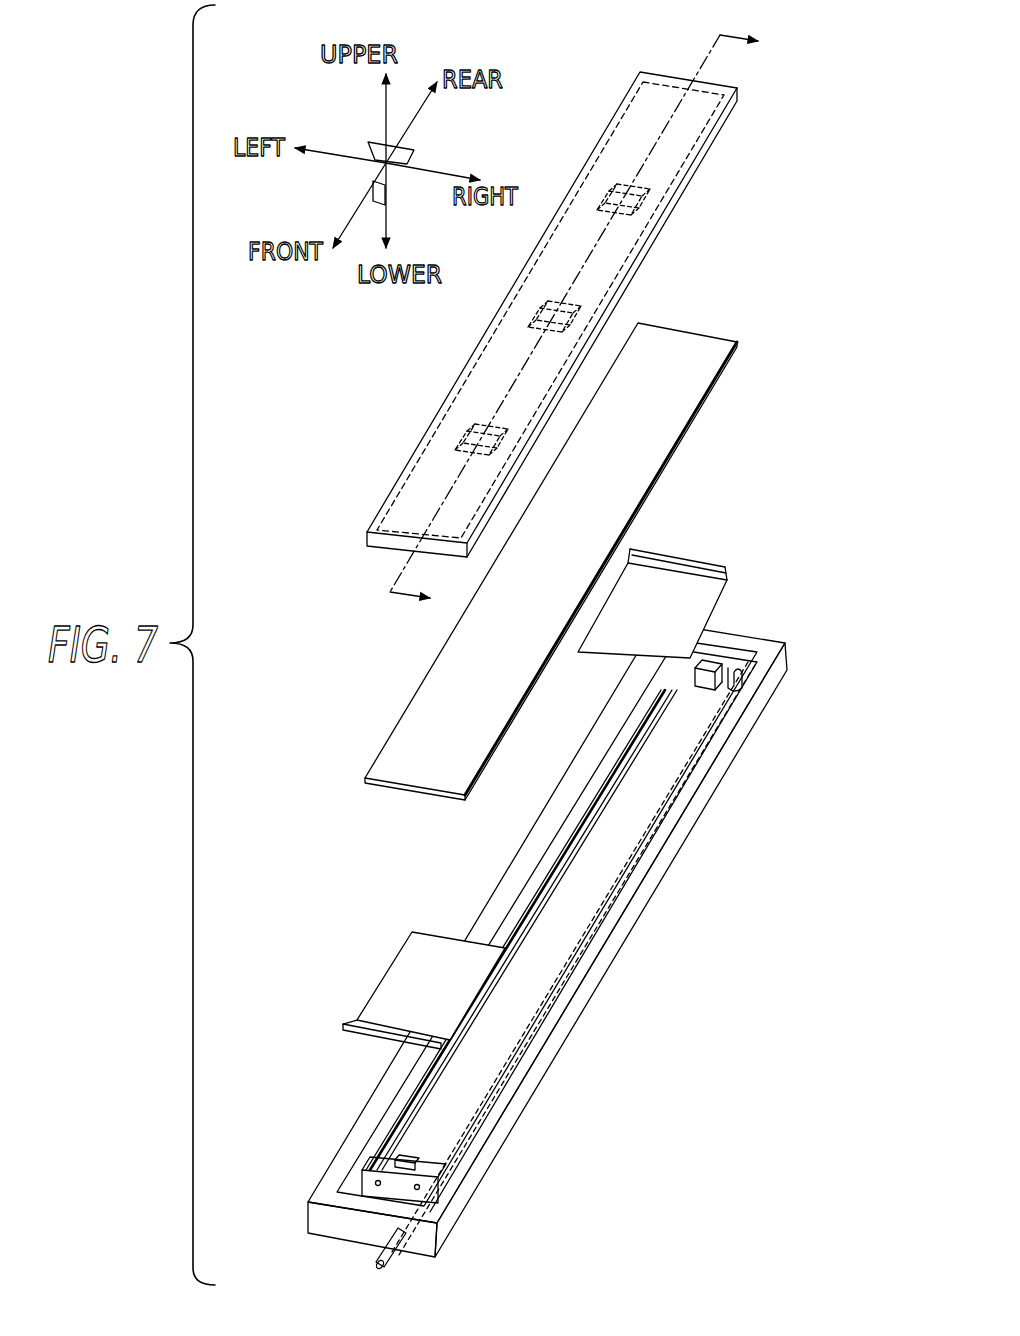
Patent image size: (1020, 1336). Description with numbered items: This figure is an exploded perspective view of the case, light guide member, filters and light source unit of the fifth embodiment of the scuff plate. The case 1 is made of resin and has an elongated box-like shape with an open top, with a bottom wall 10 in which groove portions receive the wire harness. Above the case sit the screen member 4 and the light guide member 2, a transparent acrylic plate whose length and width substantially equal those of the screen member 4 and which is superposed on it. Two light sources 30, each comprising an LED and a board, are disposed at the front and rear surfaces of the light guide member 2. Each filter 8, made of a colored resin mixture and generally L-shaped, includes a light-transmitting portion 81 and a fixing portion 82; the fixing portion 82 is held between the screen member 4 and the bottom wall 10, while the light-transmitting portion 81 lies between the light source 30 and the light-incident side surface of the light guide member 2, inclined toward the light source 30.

The case 1 is at (723, 760).
The light guide member 2 is at (694, 143).
The screen member 4 is at (685, 347).
The filter 8 is at (548, 786).
The light-transmitting portion 81 is at (350, 1043).
The fixing portion 82 is at (405, 960).
The bottom wall 10 is at (627, 817).
The light source 30 is at (407, 1160).